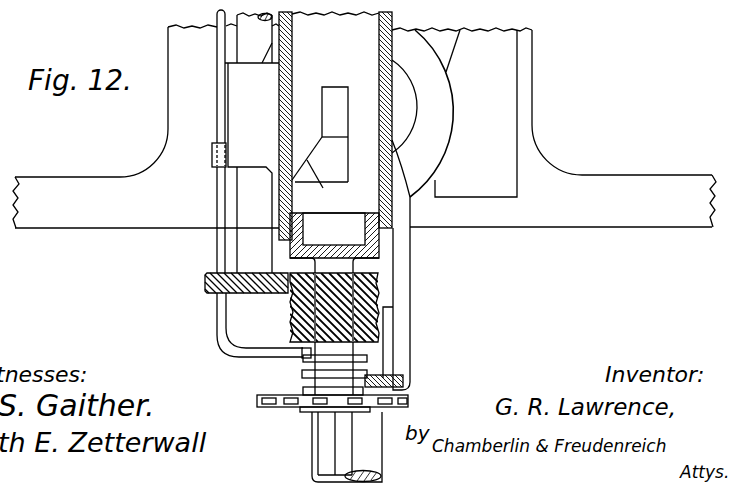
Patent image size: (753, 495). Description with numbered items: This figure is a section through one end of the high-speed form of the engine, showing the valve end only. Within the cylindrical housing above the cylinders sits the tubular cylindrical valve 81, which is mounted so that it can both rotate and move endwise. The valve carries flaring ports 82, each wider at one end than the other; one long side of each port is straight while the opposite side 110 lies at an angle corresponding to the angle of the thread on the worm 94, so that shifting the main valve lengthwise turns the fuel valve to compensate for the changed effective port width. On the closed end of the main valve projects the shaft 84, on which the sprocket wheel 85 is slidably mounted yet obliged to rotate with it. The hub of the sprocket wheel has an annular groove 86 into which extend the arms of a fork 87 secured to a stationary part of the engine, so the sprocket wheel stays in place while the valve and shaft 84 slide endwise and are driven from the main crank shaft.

The cylindrical valve 81 is at (458, 70).
The flaring ports 82 is at (346, 152).
The sprocket wheel 85 is at (332, 97).
The annular groove 86 is at (282, 378).
The fork 87 is at (386, 373).
The worm 94 is at (290, 318).
The angled side of port 110 is at (323, 173).
The shaft 84 is at (330, 432).